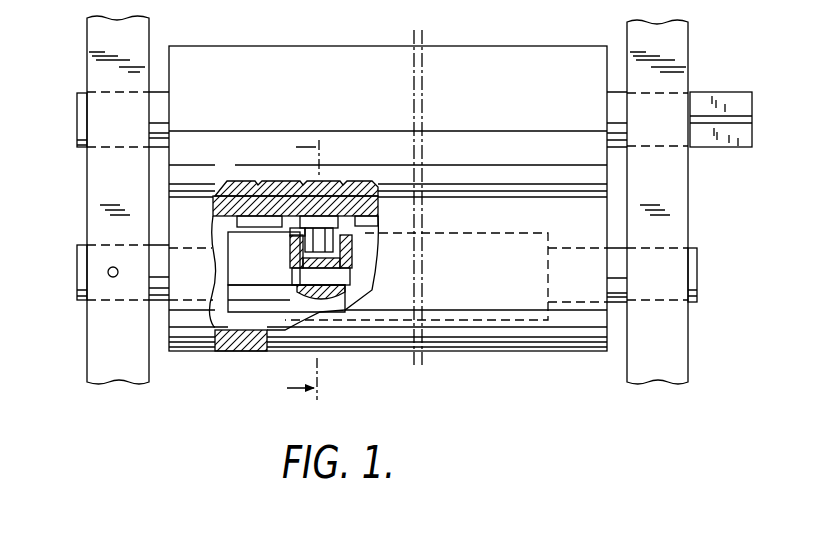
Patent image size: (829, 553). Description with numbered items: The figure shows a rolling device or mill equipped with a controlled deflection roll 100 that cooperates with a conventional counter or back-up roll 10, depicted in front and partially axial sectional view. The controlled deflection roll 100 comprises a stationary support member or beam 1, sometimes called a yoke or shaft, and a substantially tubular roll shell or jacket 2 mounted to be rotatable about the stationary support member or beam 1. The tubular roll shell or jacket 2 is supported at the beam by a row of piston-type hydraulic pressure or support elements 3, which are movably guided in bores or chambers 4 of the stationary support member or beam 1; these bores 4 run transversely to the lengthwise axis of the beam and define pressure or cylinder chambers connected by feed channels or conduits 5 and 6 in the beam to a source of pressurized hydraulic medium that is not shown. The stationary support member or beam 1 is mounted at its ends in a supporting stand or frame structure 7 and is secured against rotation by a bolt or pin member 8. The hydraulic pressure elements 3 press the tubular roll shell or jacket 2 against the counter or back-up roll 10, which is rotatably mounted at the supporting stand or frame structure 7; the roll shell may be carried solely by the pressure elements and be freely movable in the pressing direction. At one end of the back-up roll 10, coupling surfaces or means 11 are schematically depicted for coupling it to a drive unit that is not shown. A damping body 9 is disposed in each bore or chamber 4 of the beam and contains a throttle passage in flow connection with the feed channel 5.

The controlled deflection roll 100 is at (491, 368).
The counter or back-up roll 10 is at (265, 58).
The supporting stand or frame structure 7 is at (95, 194).
The bolt or pin member 8 is at (108, 270).
The coupling surfaces or means 11 is at (742, 143).
The hydraulic pressure or support elements 3 is at (292, 182).
The tubular roll shell or jacket 2 is at (230, 348).
The feed channel or conduit 6 is at (292, 272).
The stationary support member or beam 1 is at (247, 313).
The bores or chambers 4 is at (352, 255).
The feed channel or conduit 5 is at (345, 280).
The damping body 9 is at (292, 250).